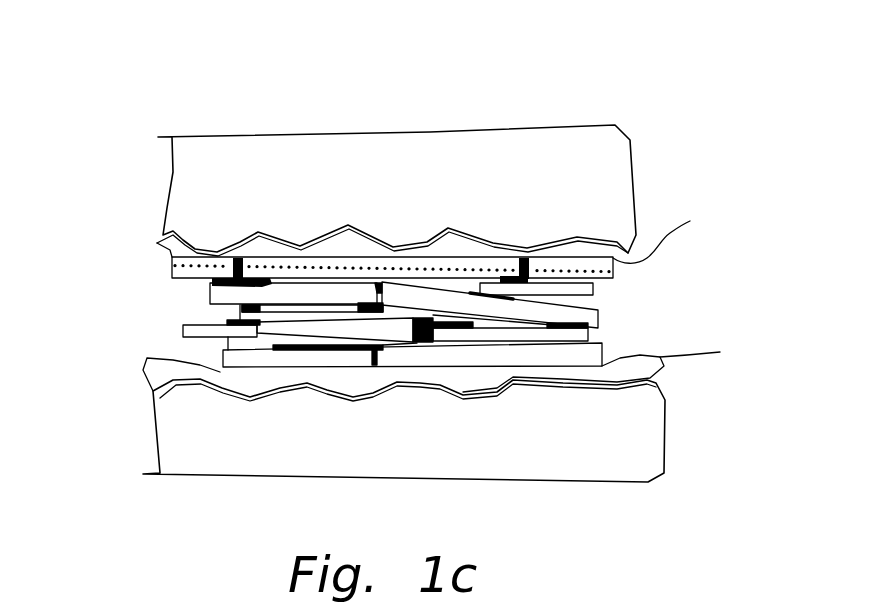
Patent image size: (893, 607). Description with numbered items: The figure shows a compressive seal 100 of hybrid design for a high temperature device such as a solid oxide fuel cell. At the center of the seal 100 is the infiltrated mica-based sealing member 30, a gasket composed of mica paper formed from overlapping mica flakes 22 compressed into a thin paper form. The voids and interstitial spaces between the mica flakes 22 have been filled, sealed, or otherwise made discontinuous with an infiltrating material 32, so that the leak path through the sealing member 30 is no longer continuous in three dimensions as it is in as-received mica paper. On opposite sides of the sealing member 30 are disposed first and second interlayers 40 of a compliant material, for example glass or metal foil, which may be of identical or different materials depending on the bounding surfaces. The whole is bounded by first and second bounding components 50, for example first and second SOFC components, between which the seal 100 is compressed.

The compressive seal 100 is at (582, 82).
The bounding component 50 is at (413, 200).
The interlayer 40 is at (451, 301).
The infiltrating material 32 is at (210, 283).
The sealing member 30 is at (408, 314).
The mica flakes 22 is at (223, 355).